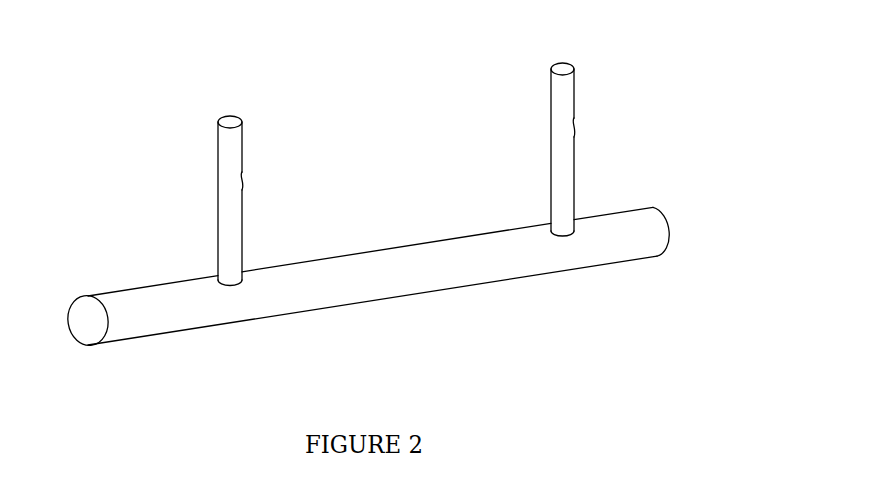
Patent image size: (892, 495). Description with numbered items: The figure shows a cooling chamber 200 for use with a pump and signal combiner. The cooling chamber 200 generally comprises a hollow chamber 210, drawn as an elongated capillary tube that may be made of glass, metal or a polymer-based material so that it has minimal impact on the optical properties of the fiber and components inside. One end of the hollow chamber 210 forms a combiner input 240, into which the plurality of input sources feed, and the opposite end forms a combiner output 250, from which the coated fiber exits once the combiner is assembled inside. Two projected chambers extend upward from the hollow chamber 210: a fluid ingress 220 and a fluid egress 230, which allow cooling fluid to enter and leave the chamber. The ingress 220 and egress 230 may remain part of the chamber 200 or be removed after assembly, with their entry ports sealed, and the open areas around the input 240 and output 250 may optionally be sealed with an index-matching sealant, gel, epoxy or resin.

The cooling chamber 200 is at (370, 58).
The hollow chamber 210 is at (390, 278).
The fluid ingress 220 is at (561, 163).
The fluid egress 230 is at (230, 202).
The combiner input 240 is at (92, 318).
The combiner output 250 is at (686, 223).